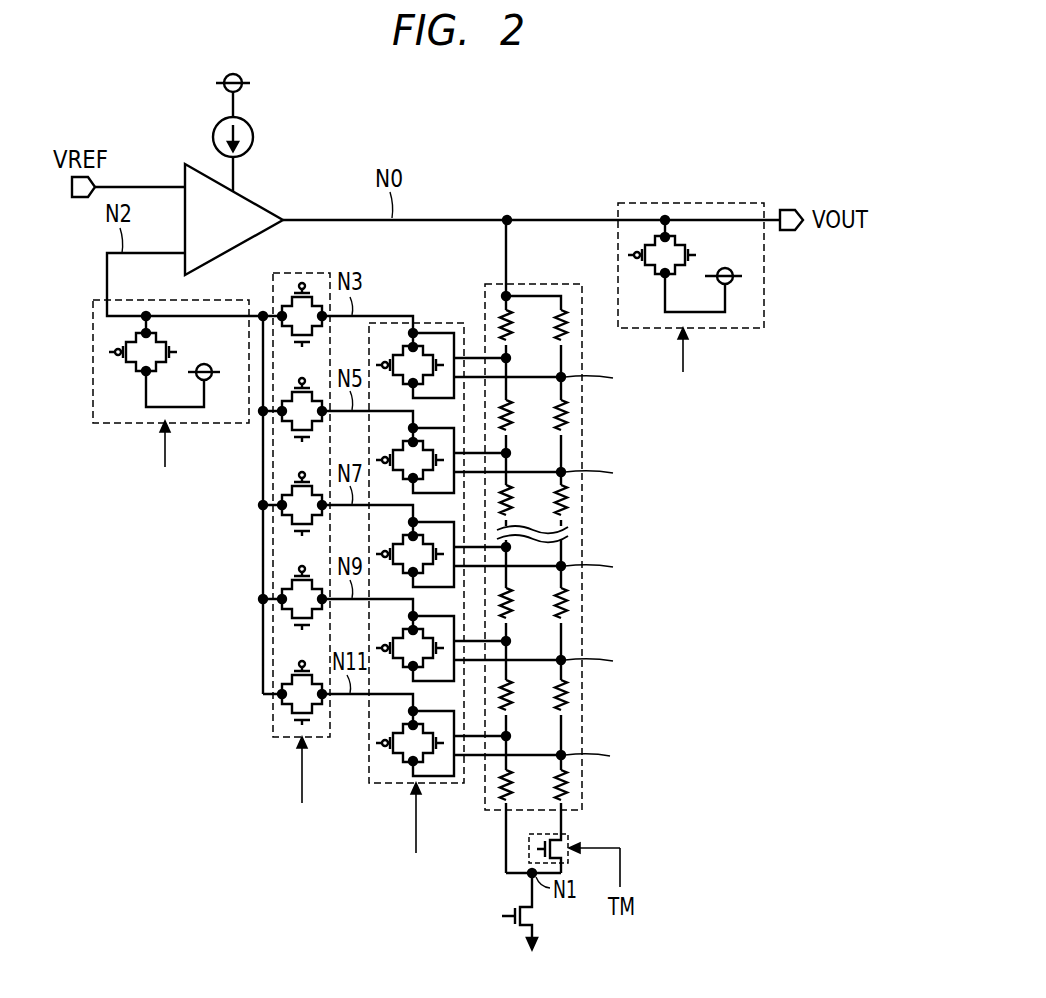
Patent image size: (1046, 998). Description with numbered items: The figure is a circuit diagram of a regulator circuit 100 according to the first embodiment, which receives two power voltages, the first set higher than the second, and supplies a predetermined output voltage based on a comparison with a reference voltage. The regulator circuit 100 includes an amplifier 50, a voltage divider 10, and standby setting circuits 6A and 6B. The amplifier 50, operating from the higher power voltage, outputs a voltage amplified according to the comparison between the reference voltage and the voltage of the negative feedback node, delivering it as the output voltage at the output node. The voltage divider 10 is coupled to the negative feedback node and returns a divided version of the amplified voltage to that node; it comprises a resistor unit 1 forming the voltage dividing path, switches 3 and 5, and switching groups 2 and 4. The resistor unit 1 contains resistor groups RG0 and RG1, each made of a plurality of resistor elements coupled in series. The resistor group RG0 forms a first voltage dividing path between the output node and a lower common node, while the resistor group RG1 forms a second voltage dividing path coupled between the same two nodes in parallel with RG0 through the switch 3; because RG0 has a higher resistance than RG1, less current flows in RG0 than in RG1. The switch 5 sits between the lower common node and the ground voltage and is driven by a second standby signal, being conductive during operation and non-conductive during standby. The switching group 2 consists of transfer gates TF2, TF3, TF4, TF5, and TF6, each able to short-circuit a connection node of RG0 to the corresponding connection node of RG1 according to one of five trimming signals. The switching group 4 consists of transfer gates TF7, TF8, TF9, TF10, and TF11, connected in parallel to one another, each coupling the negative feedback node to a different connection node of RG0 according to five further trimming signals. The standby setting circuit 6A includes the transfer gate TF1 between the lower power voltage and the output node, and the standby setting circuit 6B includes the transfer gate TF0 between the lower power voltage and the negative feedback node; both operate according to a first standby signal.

The regulator circuit 100 is at (786, 108).
The amplifier 50 is at (257, 202).
The voltage divider 10 is at (435, 280).
The switching group 4 is at (306, 537).
The switching group 2 is at (450, 588).
The resistor unit 1 is at (570, 546).
The standby setting circuit 6A is at (690, 283).
The standby setting circuit 6B is at (144, 399).
The switch 3 is at (528, 840).
The switch 5 is at (535, 915).
The transfer gate TF0 is at (123, 367).
The transfer gate TF1 is at (648, 238).
The transfer gate TF2 is at (398, 350).
The transfer gate TF3 is at (398, 445).
The transfer gate TF4 is at (400, 538).
The transfer gate TF5 is at (400, 635).
The transfer gate TF6 is at (400, 728).
The transfer gate TF7 is at (288, 293).
The transfer gate TF8 is at (287, 430).
The transfer gate TF9 is at (288, 525).
The transfer gate TF10 is at (288, 620).
The transfer gate TF11 is at (287, 712).
The resistor group RG0 is at (522, 311).
The resistor group RG1 is at (580, 311).